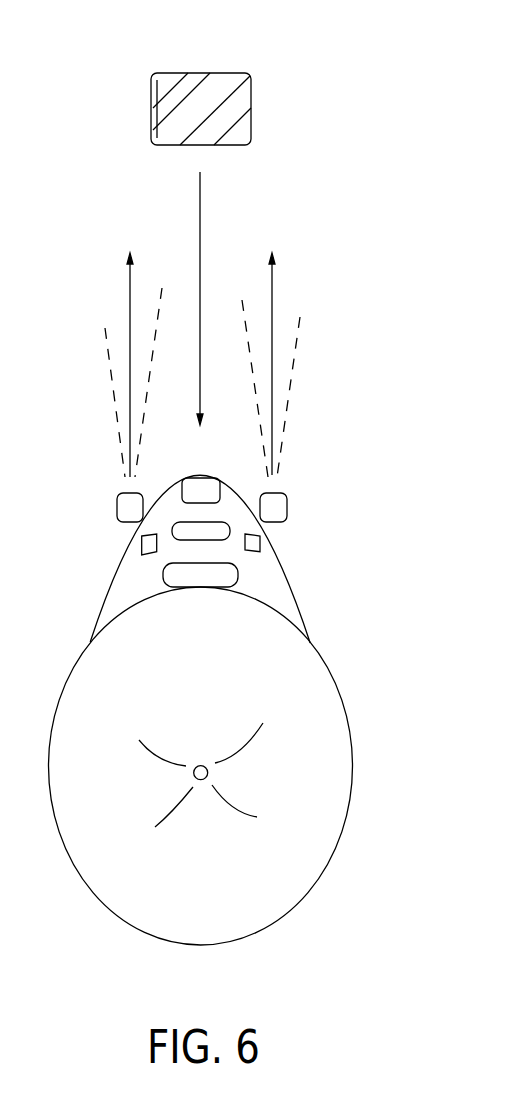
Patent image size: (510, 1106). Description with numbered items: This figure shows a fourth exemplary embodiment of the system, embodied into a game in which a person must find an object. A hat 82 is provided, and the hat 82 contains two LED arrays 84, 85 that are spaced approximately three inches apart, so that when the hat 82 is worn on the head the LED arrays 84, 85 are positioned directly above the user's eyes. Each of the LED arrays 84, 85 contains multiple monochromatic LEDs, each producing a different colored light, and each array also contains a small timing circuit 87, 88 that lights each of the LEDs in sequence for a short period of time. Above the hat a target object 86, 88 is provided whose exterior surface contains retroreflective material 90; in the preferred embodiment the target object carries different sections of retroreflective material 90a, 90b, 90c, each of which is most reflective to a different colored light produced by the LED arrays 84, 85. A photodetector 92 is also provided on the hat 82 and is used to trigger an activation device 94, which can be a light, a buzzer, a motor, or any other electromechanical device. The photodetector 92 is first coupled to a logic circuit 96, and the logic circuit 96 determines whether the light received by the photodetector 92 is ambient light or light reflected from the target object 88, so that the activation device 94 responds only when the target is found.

The hat 82 is at (317, 697).
The LED array 84 is at (125, 510).
The LED array 85 is at (278, 508).
The target object 86 is at (143, 546).
The timing circuit 87 is at (255, 548).
The timing circuit 88 is at (157, 117).
The retroreflective material 90 is at (160, 83).
The section of retroreflective material 90a is at (193, 83).
The section of retroreflective material 90b is at (233, 83).
The section of retroreflective material 90c is at (238, 110).
The photodetector 92 is at (208, 485).
The activation device 94 is at (223, 573).
The logic circuit 96 is at (223, 528).